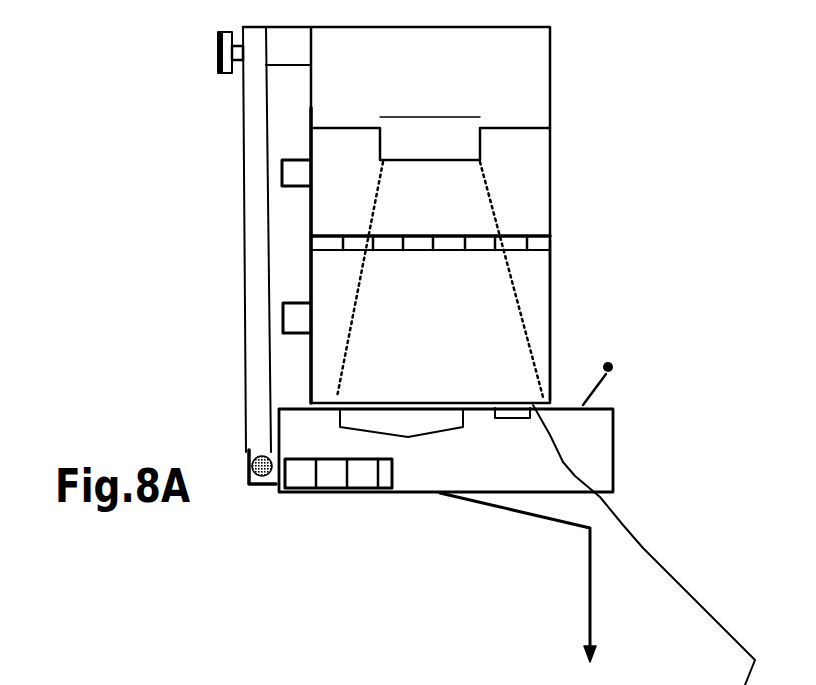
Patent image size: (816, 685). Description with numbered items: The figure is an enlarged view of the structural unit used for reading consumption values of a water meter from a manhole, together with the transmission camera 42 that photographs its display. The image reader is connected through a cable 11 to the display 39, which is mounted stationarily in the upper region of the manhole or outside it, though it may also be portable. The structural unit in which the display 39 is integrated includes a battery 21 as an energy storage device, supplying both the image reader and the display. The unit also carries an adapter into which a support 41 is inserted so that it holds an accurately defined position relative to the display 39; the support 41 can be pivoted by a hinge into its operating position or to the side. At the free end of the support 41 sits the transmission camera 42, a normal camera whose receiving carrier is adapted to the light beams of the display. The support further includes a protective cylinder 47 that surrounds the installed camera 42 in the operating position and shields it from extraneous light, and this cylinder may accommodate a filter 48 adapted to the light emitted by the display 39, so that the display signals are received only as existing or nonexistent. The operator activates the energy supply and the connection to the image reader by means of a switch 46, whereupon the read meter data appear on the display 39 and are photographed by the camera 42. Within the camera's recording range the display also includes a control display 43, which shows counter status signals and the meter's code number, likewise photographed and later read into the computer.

The cable 11 is at (573, 523).
The battery 21 is at (325, 475).
The display 39 is at (408, 418).
The support 41 is at (262, 237).
The transmission camera 42 is at (452, 94).
The control display 43 is at (533, 470).
The switch 46 is at (607, 382).
The protective cylinder 47 is at (557, 314).
The filter 48 is at (522, 235).